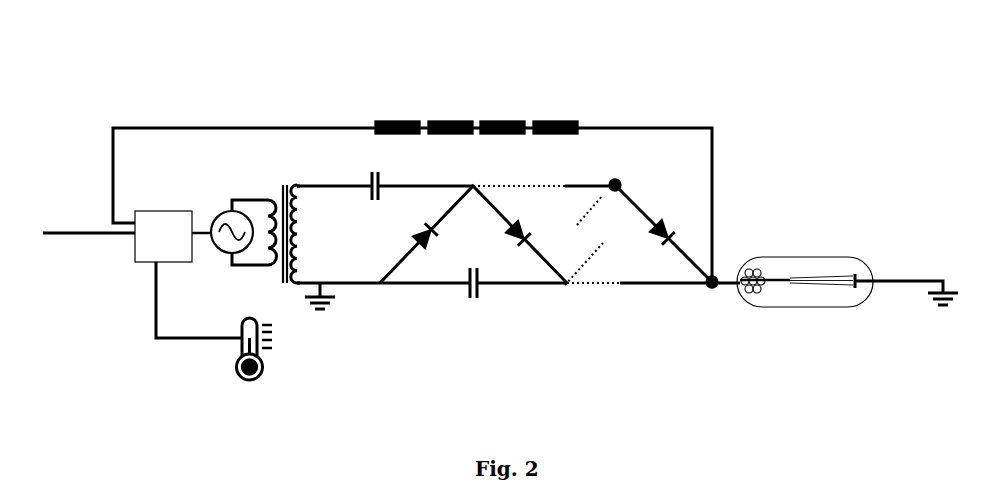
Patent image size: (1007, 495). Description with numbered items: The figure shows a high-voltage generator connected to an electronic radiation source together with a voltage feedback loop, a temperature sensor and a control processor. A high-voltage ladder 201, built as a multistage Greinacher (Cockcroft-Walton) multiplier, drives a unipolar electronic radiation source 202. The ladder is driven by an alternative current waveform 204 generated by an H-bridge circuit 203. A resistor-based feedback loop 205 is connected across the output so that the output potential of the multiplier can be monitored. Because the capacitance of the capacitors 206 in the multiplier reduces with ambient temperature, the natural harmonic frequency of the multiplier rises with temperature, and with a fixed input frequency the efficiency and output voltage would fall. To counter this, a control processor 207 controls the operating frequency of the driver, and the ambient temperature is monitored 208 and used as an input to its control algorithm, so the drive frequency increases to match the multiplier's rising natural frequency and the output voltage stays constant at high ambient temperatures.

The high-voltage ladder 201 is at (648, 217).
The unipolar electronic radiation source 202 is at (770, 262).
The H-bridge circuit 203 is at (255, 208).
The alternative current waveform 204 is at (212, 229).
The resistor-based feedback loop 205 is at (565, 117).
The capacitors 206 is at (380, 202).
The control processor 207 is at (163, 236).
The ambient temperature monitor 208 is at (272, 348).